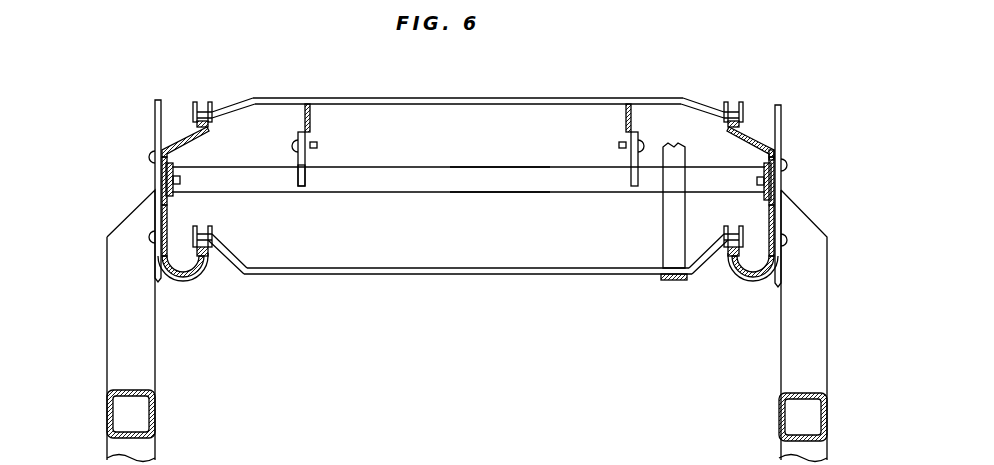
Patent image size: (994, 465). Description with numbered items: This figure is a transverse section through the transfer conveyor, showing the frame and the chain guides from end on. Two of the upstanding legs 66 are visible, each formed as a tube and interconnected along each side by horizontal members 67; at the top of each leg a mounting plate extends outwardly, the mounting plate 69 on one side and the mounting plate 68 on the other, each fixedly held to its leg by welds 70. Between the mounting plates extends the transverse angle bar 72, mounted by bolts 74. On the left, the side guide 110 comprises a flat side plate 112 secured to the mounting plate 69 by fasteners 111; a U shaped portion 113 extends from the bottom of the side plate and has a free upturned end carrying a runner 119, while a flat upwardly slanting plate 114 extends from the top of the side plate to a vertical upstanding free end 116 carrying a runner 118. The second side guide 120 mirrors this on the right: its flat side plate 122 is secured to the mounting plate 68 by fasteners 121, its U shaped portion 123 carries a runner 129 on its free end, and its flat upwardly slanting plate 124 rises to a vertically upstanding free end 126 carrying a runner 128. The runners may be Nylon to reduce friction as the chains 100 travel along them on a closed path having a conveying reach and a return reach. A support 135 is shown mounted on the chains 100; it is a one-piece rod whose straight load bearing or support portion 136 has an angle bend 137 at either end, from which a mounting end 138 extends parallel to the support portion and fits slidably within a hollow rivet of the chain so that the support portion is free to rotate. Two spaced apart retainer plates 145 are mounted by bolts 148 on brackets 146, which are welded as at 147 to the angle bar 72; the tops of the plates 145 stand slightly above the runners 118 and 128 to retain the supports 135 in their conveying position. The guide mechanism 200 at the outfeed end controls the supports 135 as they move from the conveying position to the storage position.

The upstanding legs 66 is at (140, 358).
The horizontal members 67 is at (155, 410).
The mounting plates 68 is at (782, 118).
The mounting plates 69 is at (155, 108).
The welds 70 is at (158, 281).
The angle bar 72 is at (497, 183).
The bolts 74 is at (173, 175).
The chains 100 is at (200, 112).
The side guide 110 is at (167, 218).
The fasteners 111 is at (150, 157).
The flat side plate 112 is at (157, 180).
The U shaped portion 113 is at (190, 275).
The flat upwardly slanting plate 114 is at (177, 150).
The vertical upstanding free end 116 is at (207, 135).
The runner 118 is at (197, 127).
The runner 119 is at (210, 252).
The second side guide 120 is at (762, 212).
The fasteners 121 is at (788, 162).
The flat side plate 122 is at (774, 213).
The U shaped portion 123 is at (745, 275).
The flat upwardly slanting plate 124 is at (735, 159).
The vertically upstanding free end 126 is at (733, 128).
The runner 128 is at (750, 123).
The runner 129 is at (725, 253).
The supports 135 is at (515, 100).
The load bearing or support portion 136 is at (425, 102).
The angle bend 137 is at (237, 252).
The mounting end 138 is at (197, 108).
The retainer plates 145 is at (312, 123).
The brackets 146 is at (310, 183).
The weld 147 is at (305, 165).
The bolts 148 is at (317, 146).
The guide mechanism 200 is at (662, 223).